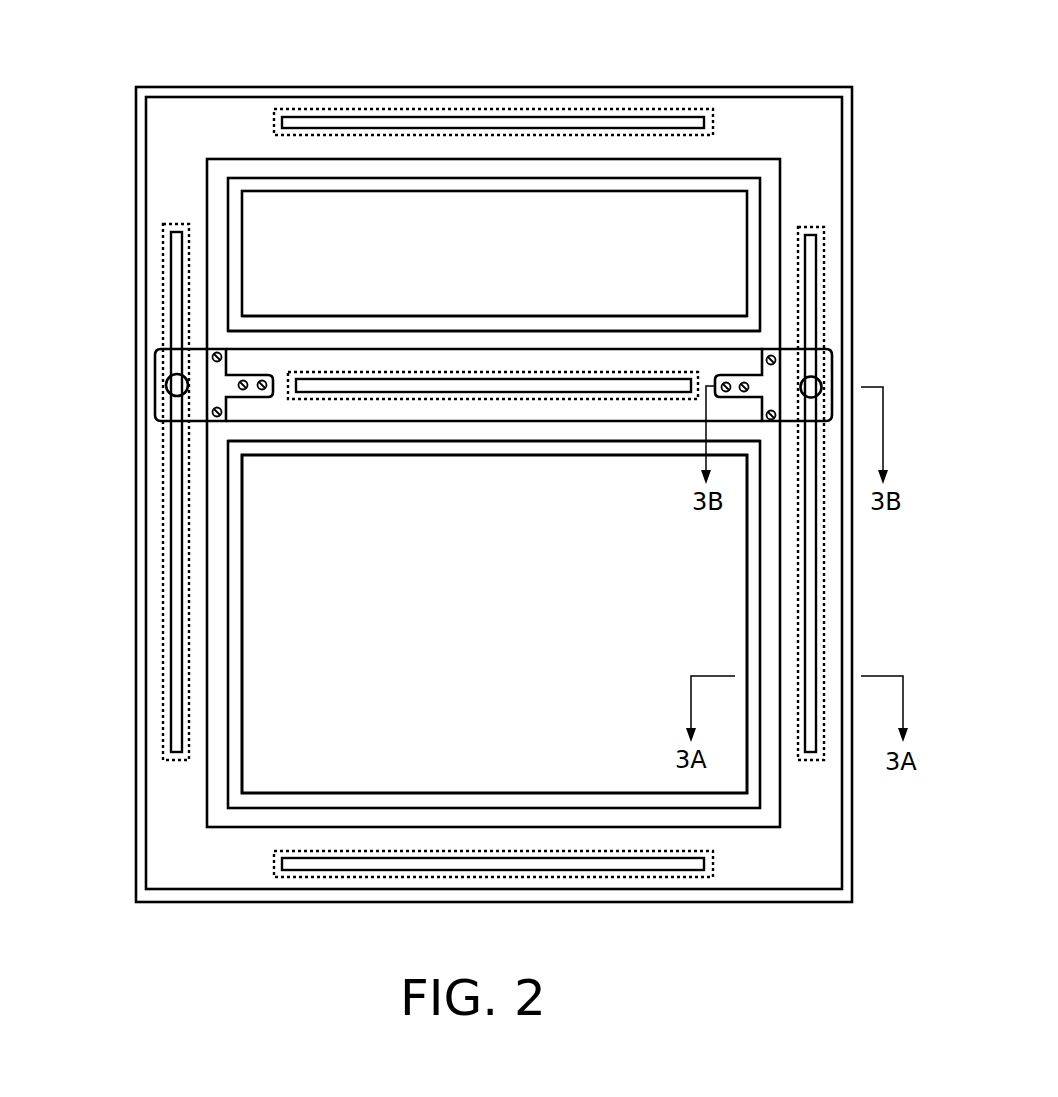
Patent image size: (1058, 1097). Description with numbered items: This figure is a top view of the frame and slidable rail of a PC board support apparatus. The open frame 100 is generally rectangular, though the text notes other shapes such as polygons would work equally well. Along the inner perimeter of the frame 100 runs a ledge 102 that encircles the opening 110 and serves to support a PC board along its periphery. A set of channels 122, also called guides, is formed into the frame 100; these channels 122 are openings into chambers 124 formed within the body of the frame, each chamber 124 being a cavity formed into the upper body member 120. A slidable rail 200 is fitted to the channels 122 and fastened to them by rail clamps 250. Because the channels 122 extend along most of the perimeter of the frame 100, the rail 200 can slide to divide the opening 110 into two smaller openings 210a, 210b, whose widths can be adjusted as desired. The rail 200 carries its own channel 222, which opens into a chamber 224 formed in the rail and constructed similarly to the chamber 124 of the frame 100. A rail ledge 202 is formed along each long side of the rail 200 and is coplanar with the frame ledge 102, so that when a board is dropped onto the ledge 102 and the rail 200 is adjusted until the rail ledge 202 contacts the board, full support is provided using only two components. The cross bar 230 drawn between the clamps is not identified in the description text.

The frame 100 is at (818, 87).
The ledge 102 is at (236, 624).
The opening 110 is at (262, 243).
The upper body member 120 is at (808, 857).
The channels 122 is at (556, 120).
The chambers 124 is at (676, 108).
The slidable rail 200 is at (358, 300).
The rail ledge 202 is at (572, 322).
The opening 210a is at (257, 480).
The opening 210b is at (257, 206).
The channel 222 is at (455, 380).
The chamber 224 is at (660, 363).
The cross bar 230 is at (196, 362).
The rail clamps 250 is at (822, 363).